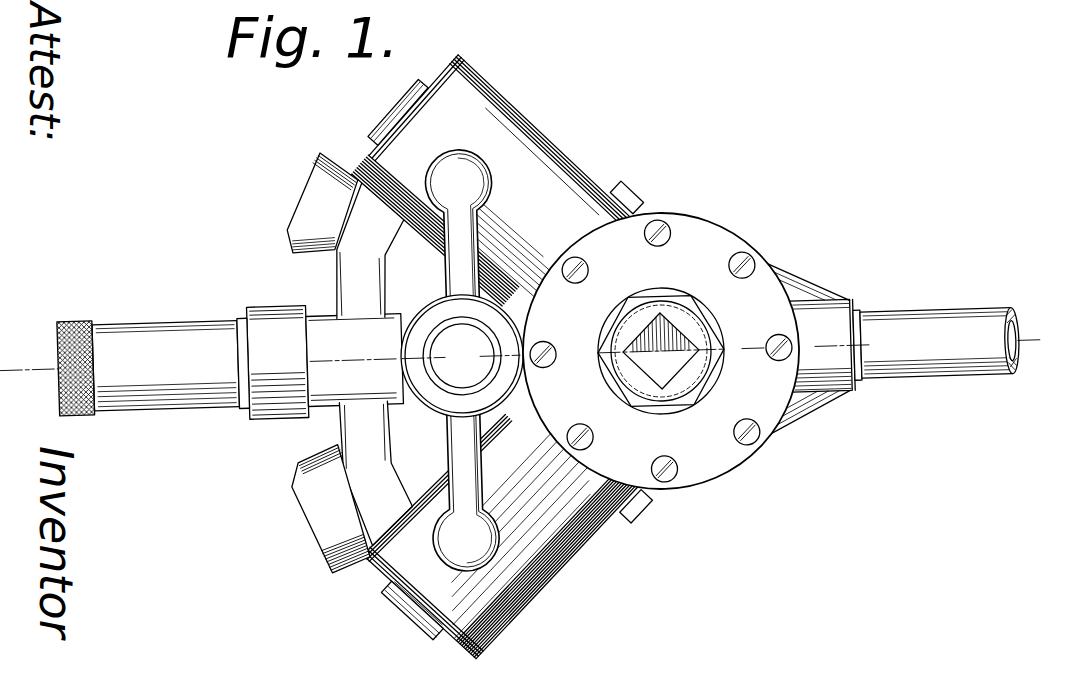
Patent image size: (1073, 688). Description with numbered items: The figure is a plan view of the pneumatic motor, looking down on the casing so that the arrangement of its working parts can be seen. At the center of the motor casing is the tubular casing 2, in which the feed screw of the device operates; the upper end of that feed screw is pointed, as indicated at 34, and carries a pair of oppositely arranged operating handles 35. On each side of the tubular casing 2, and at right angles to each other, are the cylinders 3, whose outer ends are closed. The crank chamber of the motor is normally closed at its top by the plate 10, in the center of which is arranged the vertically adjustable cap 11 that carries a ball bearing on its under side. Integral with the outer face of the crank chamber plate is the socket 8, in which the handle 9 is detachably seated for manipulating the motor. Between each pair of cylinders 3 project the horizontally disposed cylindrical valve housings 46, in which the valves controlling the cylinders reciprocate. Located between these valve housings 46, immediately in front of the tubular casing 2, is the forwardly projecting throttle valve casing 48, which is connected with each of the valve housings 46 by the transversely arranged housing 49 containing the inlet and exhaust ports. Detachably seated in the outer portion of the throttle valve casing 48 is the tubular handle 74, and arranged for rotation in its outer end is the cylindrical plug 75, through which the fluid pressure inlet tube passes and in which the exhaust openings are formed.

The tubular casing 2 is at (1019, 351).
The cylinders 3 is at (502, 356).
The socket 8 is at (806, 348).
The handle 9 is at (938, 321).
The plate 10 is at (667, 277).
The vertically adjustable cap 11 is at (661, 378).
The pointed upper end of feed screw 34 is at (477, 354).
The operating handles 35 is at (465, 165).
The cylindrical valve housings 46 is at (324, 200).
The throttle valve casing 48 is at (325, 361).
The transversely arranged housing 49 is at (373, 364).
The tubular handle 74 is at (161, 330).
The cylindrical plug 75 is at (75, 303).